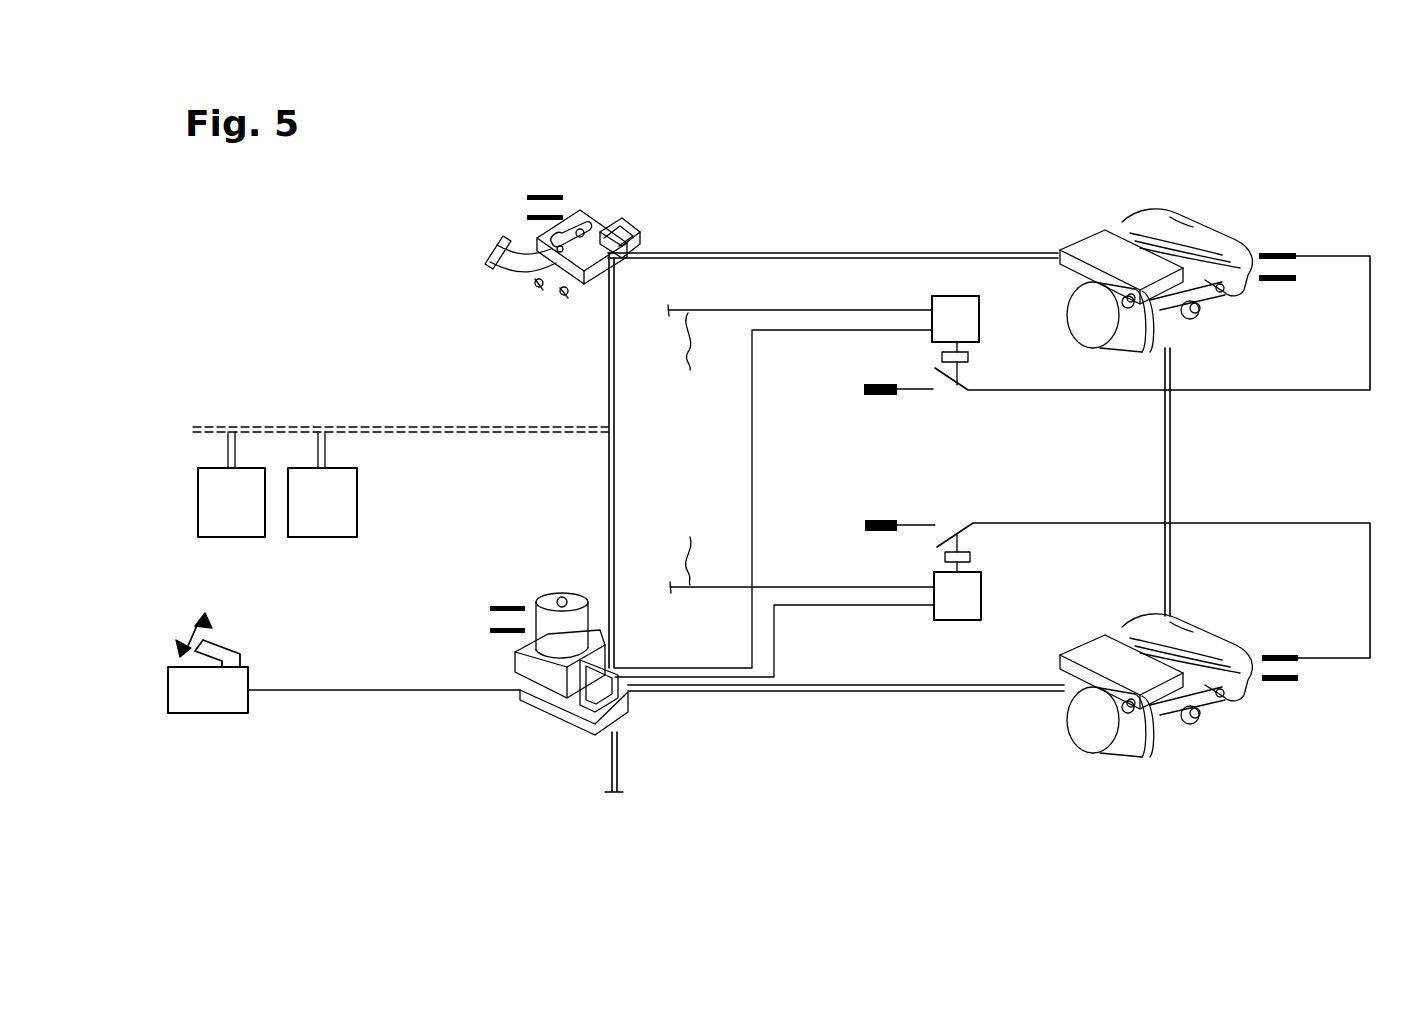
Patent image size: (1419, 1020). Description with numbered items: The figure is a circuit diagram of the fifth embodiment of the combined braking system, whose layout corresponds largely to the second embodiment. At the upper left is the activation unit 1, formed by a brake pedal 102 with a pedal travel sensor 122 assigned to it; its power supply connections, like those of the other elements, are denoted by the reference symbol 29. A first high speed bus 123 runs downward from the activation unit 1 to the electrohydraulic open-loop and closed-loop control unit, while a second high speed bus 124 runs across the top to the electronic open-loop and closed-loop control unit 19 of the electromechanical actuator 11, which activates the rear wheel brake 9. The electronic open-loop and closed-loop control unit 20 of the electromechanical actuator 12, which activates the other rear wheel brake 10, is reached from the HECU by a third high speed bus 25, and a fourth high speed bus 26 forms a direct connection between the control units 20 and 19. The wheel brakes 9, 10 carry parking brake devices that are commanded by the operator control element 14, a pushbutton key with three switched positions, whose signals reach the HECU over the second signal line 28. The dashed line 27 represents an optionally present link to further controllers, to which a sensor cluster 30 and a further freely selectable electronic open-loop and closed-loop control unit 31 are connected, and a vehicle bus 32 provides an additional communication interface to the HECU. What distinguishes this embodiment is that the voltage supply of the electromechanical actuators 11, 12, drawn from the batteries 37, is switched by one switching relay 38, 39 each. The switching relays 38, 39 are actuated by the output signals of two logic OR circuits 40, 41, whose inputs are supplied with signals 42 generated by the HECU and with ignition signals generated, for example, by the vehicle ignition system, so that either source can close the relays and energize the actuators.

The activation unit 1 is at (547, 292).
The wheel brake 9 is at (1200, 221).
The wheel brake 10 is at (1132, 661).
The electromechanical actuator 11 is at (1100, 333).
The electromechanical actuator 12 is at (1106, 722).
The operator control element 14 is at (240, 650).
The electronic open-loop and closed-loop control unit 19 is at (1082, 243).
The electronic open-loop and closed-loop control unit 20 is at (1121, 637).
The third high speed bus 25 is at (852, 692).
The fourth high speed bus 26 is at (1171, 461).
The line 27 is at (386, 426).
The second signal line 28 is at (388, 689).
The power supply connections 29 is at (545, 193).
The sensor cluster 30 is at (357, 528).
The electronic open-loop and closed-loop control unit 31 is at (198, 528).
The vehicle bus 32 is at (617, 782).
The battery 37 is at (1278, 253).
The switching relay 38 is at (963, 377).
The switching relay 39 is at (968, 530).
The logic OR circuit 40 is at (980, 318).
The logic OR circuit 41 is at (982, 617).
The signals 42 is at (703, 667).
The brake pedal 102 is at (490, 256).
The pedal travel sensor 122 is at (610, 222).
The first high speed bus 123 is at (614, 460).
The second high speed bus 124 is at (852, 252).